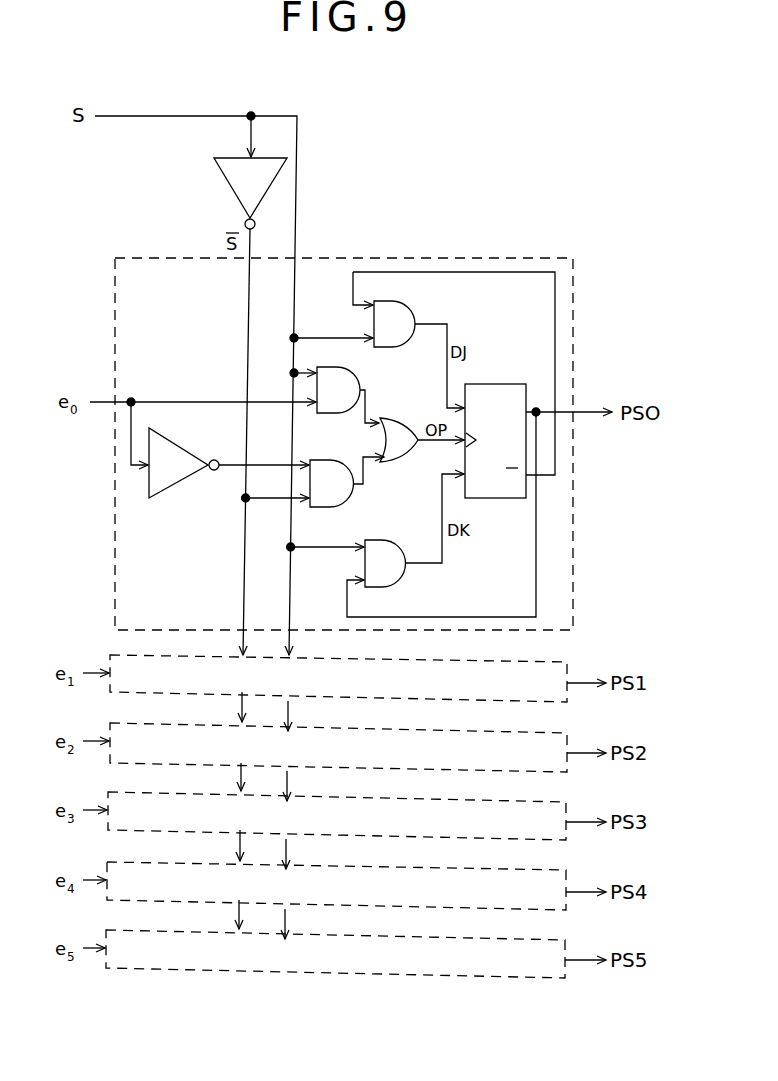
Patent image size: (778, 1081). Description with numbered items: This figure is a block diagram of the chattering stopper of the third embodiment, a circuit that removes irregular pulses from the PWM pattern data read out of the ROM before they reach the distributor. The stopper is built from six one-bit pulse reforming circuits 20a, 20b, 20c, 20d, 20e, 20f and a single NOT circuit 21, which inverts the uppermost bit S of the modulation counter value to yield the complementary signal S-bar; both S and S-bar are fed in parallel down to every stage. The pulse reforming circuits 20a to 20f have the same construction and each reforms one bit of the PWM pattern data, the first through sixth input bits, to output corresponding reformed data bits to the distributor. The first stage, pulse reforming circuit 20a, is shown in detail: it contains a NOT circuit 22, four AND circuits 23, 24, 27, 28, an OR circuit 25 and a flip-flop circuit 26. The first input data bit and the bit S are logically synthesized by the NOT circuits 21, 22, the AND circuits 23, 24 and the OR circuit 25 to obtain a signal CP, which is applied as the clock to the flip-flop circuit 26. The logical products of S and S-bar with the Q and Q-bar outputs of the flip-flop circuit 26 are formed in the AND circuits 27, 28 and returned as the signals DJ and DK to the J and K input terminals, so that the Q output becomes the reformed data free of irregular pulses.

The pulse reforming circuit 20a is at (477, 258).
The pulse reforming circuit 20b is at (489, 668).
The pulse reforming circuit 20c is at (490, 737).
The pulse reforming circuit 20d is at (490, 805).
The pulse reforming circuit 20e is at (490, 874).
The pulse reforming circuit 20f is at (490, 942).
The NOT circuit 21 is at (289, 160).
The NOT circuit 22 is at (193, 453).
The AND circuit 23 is at (342, 460).
The AND circuit 24 is at (359, 386).
The OR circuit 25 is at (393, 420).
The flip-flop circuit 26 is at (505, 384).
The AND circuit 27 is at (415, 316).
The AND circuit 28 is at (393, 540).